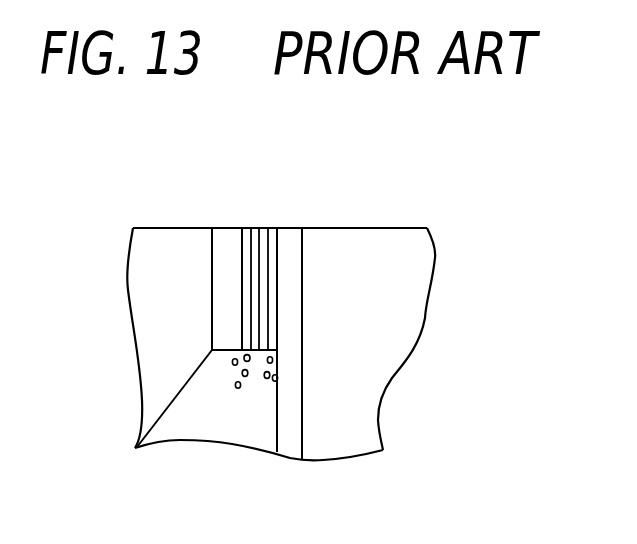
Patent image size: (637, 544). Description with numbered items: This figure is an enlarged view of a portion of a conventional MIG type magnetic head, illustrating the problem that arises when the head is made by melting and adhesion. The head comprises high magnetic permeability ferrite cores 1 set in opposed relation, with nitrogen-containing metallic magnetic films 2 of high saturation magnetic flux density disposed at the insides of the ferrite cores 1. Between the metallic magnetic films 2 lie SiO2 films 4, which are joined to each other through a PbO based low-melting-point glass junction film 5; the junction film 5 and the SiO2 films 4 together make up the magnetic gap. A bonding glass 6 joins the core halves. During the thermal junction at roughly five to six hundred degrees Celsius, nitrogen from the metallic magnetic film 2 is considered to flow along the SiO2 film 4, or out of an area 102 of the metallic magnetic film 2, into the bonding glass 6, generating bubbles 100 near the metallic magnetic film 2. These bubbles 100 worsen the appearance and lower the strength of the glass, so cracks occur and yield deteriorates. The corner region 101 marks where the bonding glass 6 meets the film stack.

The ferrite core 1 is at (162, 247).
The metallic magnetic film 2 is at (223, 244).
The SiO2 film 4 is at (247, 228).
The junction film 5 is at (265, 228).
The bonding glass 6 is at (175, 430).
The bubbles 100 is at (238, 390).
The groove bottom corner 101 is at (212, 337).
The area of the metallic magnetic film 102 is at (273, 390).